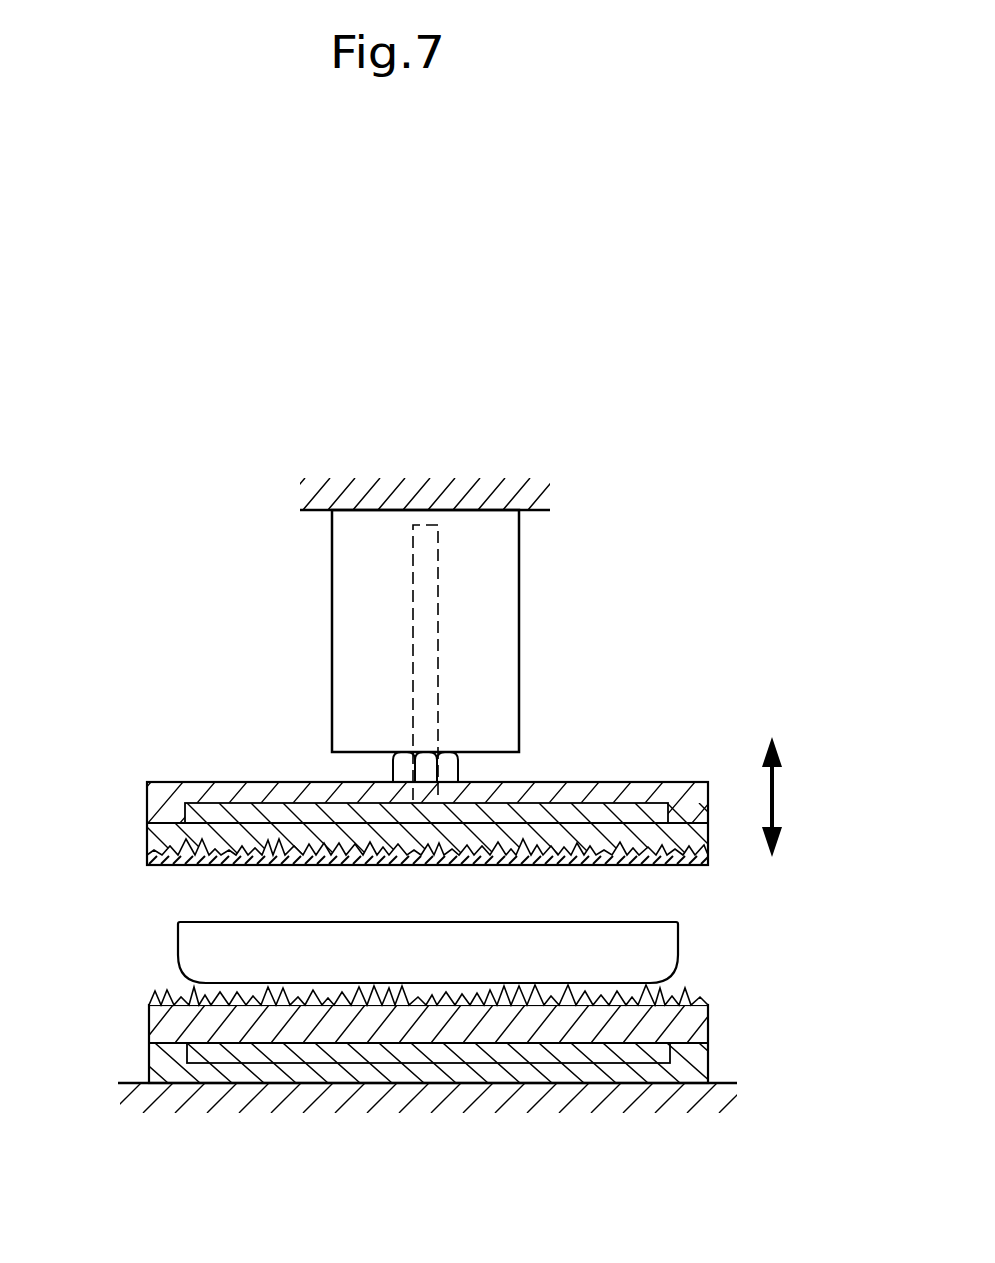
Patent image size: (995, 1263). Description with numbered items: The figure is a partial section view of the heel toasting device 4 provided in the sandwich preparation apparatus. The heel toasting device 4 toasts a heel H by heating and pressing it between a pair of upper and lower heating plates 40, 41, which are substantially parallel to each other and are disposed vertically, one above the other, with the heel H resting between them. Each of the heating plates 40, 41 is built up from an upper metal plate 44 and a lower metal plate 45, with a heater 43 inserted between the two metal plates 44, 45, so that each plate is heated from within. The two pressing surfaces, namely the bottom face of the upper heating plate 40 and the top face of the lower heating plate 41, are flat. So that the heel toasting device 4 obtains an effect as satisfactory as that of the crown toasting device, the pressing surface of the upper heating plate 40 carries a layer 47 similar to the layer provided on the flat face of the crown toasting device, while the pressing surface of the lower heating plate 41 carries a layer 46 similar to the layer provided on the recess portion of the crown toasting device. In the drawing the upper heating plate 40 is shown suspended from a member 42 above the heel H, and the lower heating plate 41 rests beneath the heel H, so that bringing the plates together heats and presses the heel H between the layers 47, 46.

The heel toasting device 4 is at (688, 605).
The upper heating plate 40 is at (697, 763).
The lower heating plate 41 is at (723, 1020).
The cylinder 42 is at (500, 600).
The heater 43 is at (660, 816).
The upper metal plate 44 is at (155, 797).
The lower metal plate 45 is at (157, 835).
The layer 46 is at (150, 998).
The layer 47 is at (153, 868).
The heel H is at (665, 950).